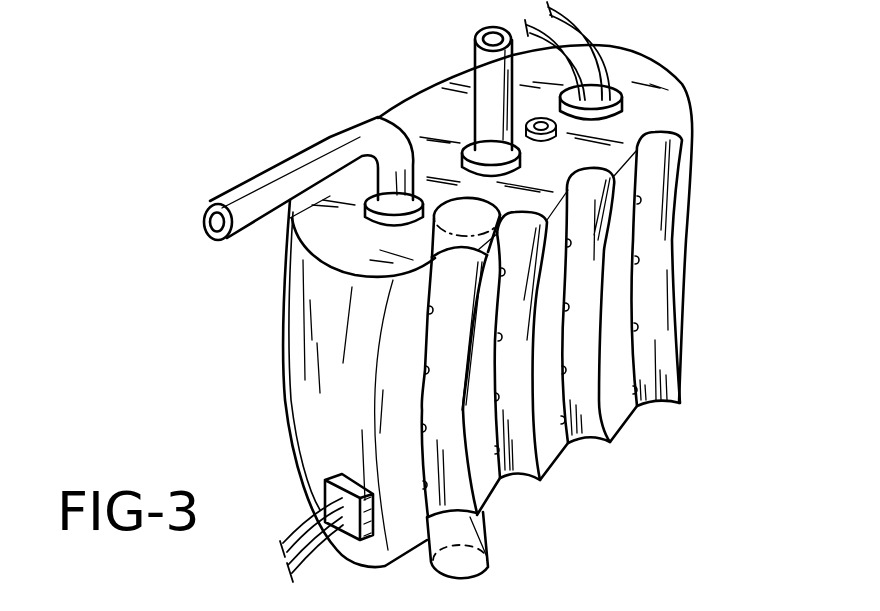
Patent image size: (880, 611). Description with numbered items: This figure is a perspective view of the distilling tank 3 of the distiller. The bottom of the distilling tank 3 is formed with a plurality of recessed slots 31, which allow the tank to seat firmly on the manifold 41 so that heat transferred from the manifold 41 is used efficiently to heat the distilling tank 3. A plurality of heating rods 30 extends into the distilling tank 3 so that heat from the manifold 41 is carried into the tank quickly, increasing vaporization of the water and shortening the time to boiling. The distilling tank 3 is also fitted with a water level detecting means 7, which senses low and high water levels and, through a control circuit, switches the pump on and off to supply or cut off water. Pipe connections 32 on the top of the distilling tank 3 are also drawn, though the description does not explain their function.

The distilling tank 3 is at (313, 310).
The water level detecting means 7 is at (619, 97).
The heating rod 30 is at (630, 330).
The recessed slot 31 is at (578, 272).
The pipe connection 32 is at (493, 68).
The manifold 41 is at (465, 536).